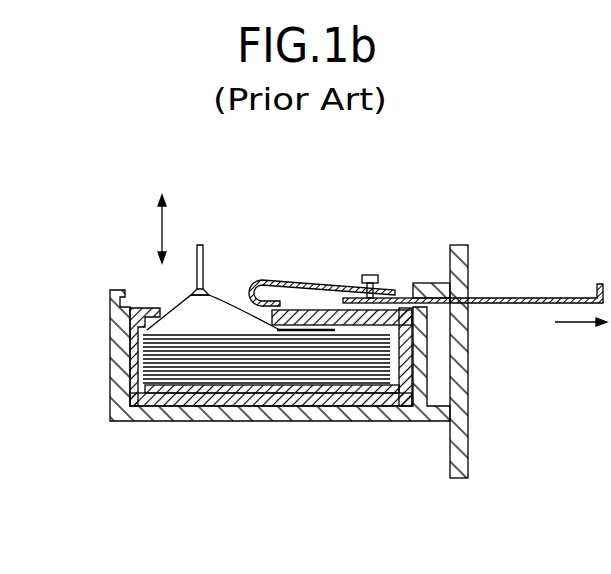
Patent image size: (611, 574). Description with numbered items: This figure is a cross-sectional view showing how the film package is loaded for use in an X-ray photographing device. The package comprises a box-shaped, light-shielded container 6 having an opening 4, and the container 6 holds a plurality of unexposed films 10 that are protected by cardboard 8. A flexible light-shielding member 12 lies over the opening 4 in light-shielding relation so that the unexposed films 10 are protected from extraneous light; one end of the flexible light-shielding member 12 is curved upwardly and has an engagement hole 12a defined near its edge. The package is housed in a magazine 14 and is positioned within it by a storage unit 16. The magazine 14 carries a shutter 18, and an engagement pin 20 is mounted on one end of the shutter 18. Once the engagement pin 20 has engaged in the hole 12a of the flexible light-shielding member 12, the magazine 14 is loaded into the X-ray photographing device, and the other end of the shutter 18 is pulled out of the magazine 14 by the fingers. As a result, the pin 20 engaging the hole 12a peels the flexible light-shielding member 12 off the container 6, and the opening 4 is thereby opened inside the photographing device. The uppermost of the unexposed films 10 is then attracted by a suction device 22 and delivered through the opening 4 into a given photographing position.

The opening 4 is at (178, 320).
The light-shielded container 6 is at (413, 367).
The cardboard 8 is at (375, 397).
The unexposed films 10 is at (233, 302).
The flexible light-shielding member 12 is at (302, 281).
The engagement hole 12a is at (443, 192).
The magazine 14 is at (471, 460).
The storage unit 16 is at (267, 422).
The shutter 18 is at (530, 296).
The engagement pin 20 is at (372, 275).
The suction device 22 is at (210, 262).